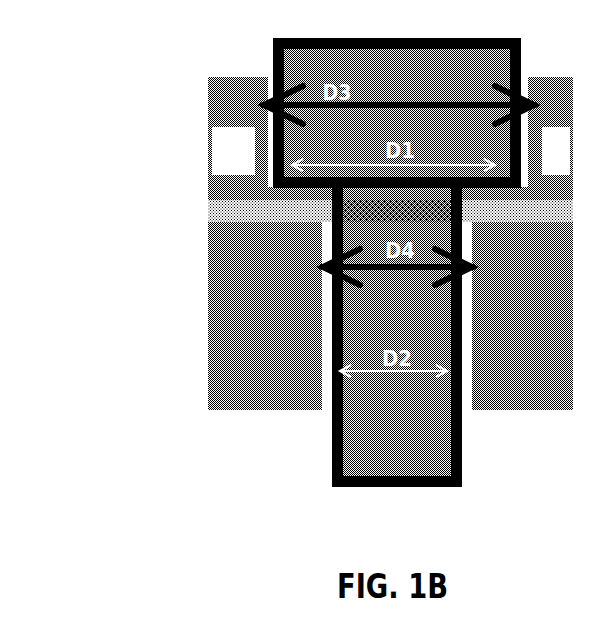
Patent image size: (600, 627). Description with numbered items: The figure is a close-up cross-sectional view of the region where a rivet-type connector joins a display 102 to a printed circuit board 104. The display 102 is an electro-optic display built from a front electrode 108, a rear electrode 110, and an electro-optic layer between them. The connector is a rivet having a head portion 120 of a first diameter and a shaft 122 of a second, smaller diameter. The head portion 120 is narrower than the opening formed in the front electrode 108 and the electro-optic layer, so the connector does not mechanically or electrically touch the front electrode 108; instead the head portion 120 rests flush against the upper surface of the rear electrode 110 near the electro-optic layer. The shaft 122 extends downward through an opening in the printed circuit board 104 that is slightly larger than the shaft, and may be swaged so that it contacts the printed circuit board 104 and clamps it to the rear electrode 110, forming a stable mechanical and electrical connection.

The display 102 is at (308, 146).
The printed circuit board 104 is at (390, 316).
The front electrode 108 is at (220, 100).
The rear electrode 110 is at (222, 212).
The head portion 120 is at (397, 113).
The shaft 122 is at (397, 335).